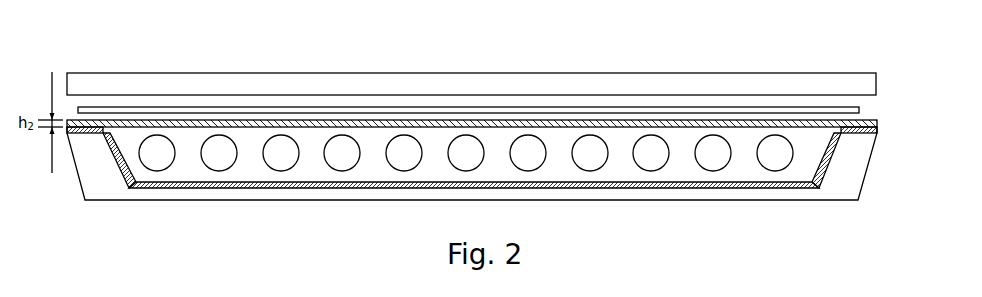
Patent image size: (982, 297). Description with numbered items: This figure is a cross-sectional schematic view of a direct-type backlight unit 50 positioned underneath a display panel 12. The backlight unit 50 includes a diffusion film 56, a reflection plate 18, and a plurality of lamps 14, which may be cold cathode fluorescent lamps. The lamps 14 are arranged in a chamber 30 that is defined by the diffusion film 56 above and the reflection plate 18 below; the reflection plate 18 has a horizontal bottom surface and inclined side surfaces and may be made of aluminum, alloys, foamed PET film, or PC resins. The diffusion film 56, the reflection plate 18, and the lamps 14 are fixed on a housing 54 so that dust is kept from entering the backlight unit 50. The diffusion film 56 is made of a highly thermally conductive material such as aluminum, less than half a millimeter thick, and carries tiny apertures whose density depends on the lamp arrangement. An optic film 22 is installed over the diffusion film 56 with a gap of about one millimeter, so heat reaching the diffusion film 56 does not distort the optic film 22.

The display panel 12 is at (92, 85).
The optic film 22 is at (180, 110).
The diffusion film 56 is at (370, 124).
The lamps 14 is at (466, 155).
The backlight unit 50 is at (881, 108).
The reflection plate 18 is at (137, 187).
The chamber 30 is at (368, 184).
The housing 54 is at (742, 201).